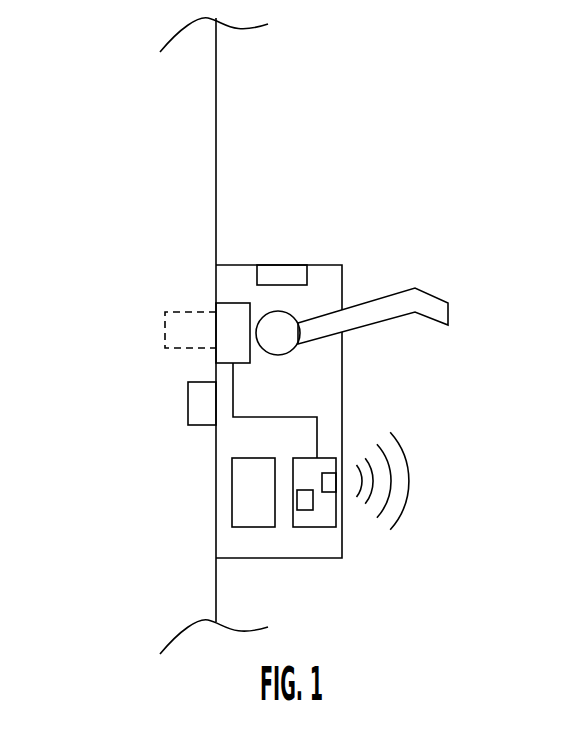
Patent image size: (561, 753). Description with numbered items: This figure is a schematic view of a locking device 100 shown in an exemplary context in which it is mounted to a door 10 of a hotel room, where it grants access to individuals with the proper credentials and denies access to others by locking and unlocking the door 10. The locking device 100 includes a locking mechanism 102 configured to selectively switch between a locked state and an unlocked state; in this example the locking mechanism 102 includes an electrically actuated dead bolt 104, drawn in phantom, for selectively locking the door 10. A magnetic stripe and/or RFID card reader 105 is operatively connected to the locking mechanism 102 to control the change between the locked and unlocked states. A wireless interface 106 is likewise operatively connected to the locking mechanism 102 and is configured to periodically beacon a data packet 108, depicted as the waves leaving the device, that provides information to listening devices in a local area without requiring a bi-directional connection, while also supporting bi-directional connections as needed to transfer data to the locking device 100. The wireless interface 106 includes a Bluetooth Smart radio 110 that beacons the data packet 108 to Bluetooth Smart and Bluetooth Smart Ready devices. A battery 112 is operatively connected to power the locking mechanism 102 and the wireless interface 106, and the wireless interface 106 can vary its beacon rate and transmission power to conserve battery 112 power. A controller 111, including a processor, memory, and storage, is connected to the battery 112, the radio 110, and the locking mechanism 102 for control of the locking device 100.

The locking device 100 is at (133, 186).
The door 10 is at (308, 162).
The locking mechanism 102 is at (235, 310).
The electrically actuated dead bolt 104 is at (165, 312).
The magnetic stripe and/or RFID card reader 105 is at (287, 263).
The wireless interface 106 is at (318, 458).
The data packet 108 is at (418, 465).
The Bluetooth Smart radio 110 is at (325, 492).
The controller 111 is at (307, 527).
The battery 112 is at (252, 490).